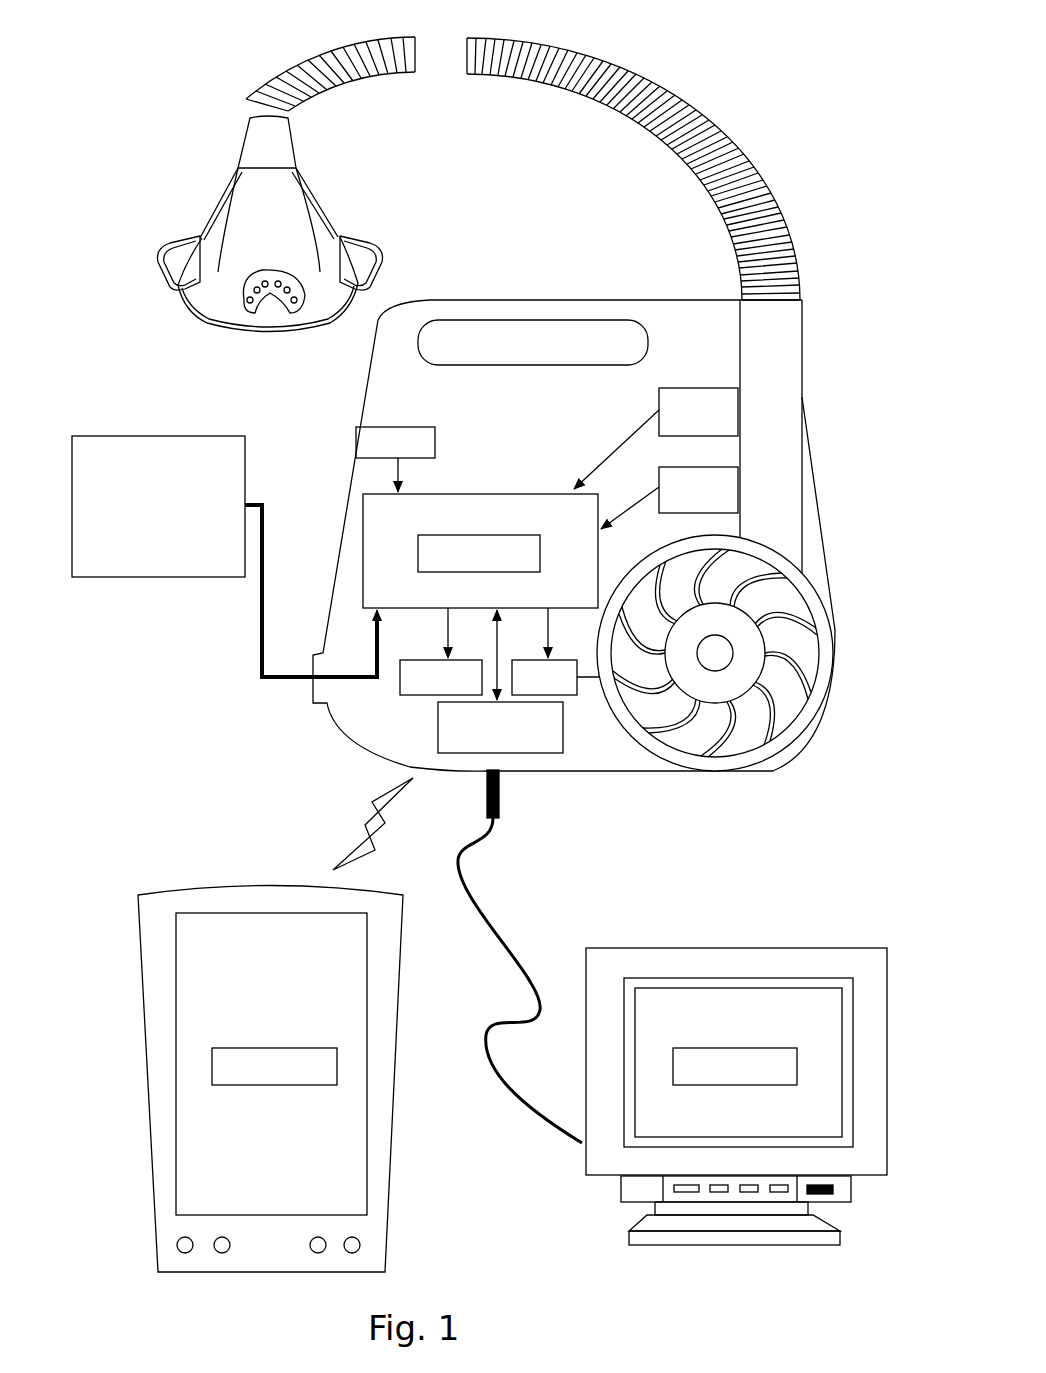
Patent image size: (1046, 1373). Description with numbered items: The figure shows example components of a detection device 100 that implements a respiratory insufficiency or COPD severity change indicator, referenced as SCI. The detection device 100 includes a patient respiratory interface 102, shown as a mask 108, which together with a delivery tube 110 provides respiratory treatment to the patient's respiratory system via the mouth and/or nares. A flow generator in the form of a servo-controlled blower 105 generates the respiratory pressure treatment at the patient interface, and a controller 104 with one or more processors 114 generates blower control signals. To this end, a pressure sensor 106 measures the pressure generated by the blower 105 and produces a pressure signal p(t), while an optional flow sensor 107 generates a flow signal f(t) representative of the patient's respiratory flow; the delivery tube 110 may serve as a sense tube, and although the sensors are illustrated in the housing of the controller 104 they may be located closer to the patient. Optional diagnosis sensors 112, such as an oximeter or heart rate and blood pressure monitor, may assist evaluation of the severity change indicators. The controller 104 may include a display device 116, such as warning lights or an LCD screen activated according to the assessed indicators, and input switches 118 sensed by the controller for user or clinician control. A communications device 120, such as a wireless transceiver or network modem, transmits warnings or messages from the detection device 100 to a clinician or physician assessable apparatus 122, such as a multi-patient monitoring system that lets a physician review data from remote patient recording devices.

The detection device 100 is at (708, 60).
The patient respiratory interface 102 is at (232, 106).
The controller 104 is at (465, 385).
The servo-controlled blower 105 is at (728, 772).
The pressure sensor 106 is at (698, 412).
The flow sensor 107 is at (698, 490).
The mask 108 is at (178, 315).
The delivery tube 110 is at (600, 95).
The diagnosis sensors 112 is at (190, 577).
The processors 114 is at (505, 494).
The display device 116 is at (400, 692).
The input switches 118 is at (389, 427).
The communications device 120 is at (530, 753).
The clinician or physician assessable apparatus 122 is at (240, 878).